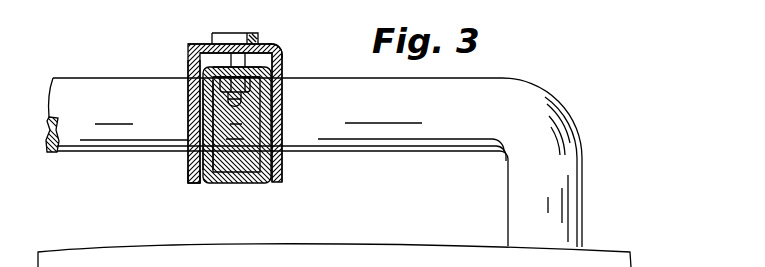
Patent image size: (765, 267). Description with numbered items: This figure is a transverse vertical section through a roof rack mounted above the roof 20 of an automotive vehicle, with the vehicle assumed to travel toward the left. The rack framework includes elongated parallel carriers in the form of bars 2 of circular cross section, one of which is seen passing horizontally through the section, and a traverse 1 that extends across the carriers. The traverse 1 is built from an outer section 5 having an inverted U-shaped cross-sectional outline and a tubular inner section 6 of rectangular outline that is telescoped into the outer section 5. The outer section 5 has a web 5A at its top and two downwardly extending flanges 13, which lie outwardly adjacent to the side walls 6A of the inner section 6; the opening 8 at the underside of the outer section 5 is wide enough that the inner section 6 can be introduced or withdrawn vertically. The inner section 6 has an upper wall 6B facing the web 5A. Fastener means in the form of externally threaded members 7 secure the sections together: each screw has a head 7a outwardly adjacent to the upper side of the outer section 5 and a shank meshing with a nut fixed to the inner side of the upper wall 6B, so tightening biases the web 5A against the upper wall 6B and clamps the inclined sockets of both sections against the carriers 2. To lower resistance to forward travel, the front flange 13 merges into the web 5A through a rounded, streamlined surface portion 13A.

The traverse 1 is at (288, 56).
The carrier 2 is at (421, 134).
The outer section 5 is at (283, 96).
The web 5A is at (278, 46).
The inner section 6 is at (239, 182).
The side wall 6A is at (208, 112).
The upper wall 6B is at (235, 70).
The externally threaded member 7 is at (228, 60).
The head 7a is at (250, 39).
The opening 8 is at (202, 185).
The flange 13 is at (188, 66).
The rounded surface portion 13A is at (188, 46).
The roof 20 is at (597, 247).